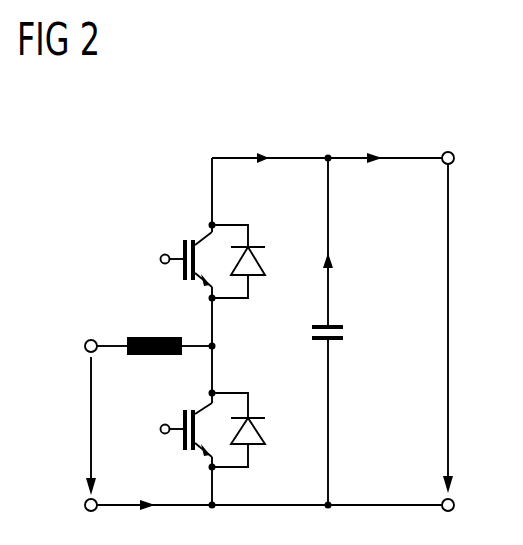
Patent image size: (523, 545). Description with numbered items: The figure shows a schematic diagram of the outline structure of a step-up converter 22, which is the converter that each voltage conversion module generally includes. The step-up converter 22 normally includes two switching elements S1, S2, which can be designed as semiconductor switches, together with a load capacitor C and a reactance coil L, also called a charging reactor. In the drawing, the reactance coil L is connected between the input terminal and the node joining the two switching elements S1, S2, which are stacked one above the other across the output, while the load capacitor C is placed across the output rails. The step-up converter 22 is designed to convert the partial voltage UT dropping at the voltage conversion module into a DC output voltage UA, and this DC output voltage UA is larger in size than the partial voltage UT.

The step-up converter 22 is at (98, 184).
The switching element S1 is at (196, 261).
The switching element S2 is at (196, 430).
The reactance coil L is at (154, 331).
The load capacitor C is at (329, 331).
The partial voltage UT is at (79, 417).
The DC output voltage UA is at (462, 328).